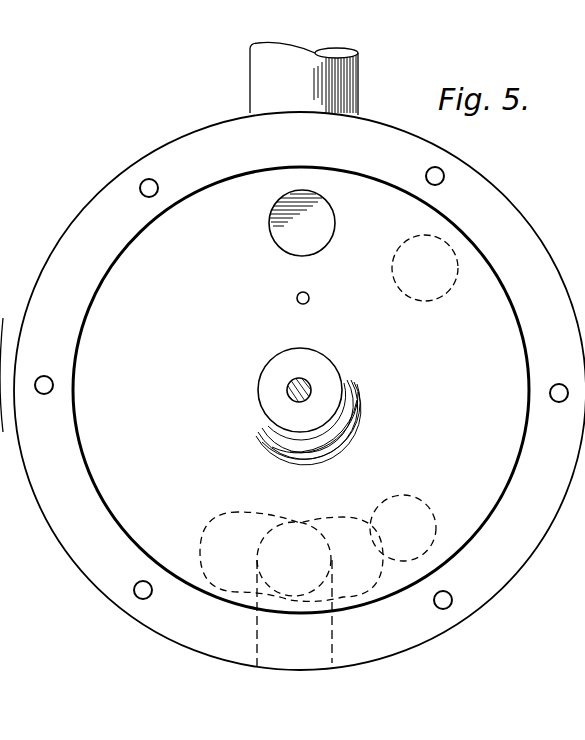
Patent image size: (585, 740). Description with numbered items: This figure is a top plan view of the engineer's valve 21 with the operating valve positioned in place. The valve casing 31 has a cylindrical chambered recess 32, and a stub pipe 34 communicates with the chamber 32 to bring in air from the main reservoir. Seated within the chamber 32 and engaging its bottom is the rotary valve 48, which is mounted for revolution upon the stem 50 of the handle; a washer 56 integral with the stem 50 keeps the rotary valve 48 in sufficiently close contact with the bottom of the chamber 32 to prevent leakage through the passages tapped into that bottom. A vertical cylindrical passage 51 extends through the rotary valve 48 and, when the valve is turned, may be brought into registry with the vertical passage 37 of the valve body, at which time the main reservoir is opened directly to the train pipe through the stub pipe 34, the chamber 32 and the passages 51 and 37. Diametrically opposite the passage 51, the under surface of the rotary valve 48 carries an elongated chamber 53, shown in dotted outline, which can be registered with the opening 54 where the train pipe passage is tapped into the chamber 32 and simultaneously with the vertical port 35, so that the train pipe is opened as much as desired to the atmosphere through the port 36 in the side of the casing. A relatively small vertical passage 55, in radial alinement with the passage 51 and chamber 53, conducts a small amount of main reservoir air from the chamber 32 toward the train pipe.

The engineer's valve 21 is at (301, 377).
The valve casing 31 is at (515, 222).
The cylindrical chambered recess 32 is at (114, 503).
The stub pipe 34 is at (258, 82).
The vertical port 35 is at (330, 568).
The port 36 is at (291, 660).
The vertical passage 37 is at (452, 276).
The rotary valve 48 is at (138, 281).
The stem 50 is at (299, 390).
The vertical cylindrical passage 51 is at (333, 228).
The elongated chamber 53 is at (340, 512).
The opening 54 is at (432, 507).
The small vertical passage 55 is at (296, 298).
The washer 56 is at (298, 357).